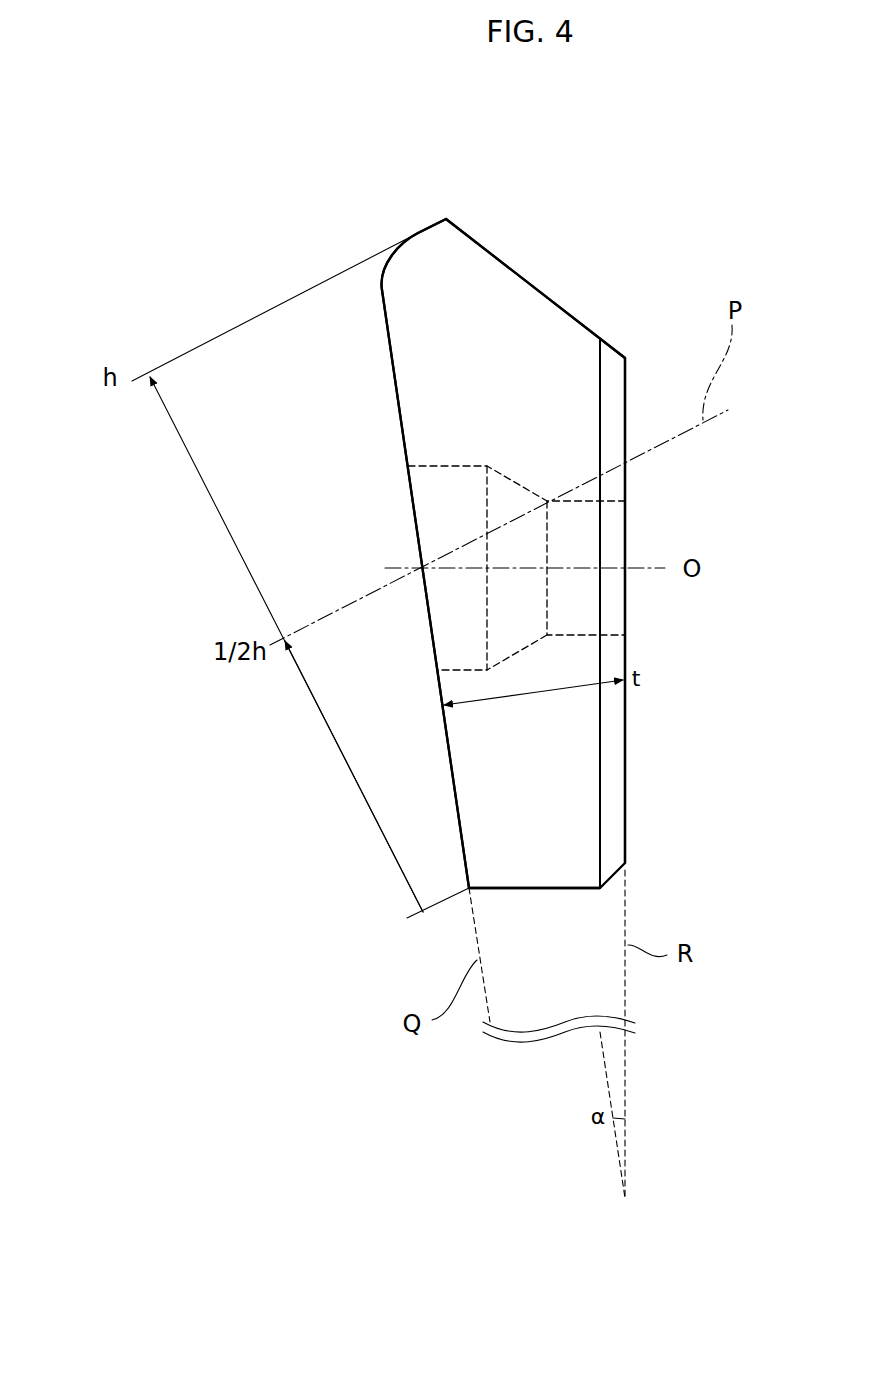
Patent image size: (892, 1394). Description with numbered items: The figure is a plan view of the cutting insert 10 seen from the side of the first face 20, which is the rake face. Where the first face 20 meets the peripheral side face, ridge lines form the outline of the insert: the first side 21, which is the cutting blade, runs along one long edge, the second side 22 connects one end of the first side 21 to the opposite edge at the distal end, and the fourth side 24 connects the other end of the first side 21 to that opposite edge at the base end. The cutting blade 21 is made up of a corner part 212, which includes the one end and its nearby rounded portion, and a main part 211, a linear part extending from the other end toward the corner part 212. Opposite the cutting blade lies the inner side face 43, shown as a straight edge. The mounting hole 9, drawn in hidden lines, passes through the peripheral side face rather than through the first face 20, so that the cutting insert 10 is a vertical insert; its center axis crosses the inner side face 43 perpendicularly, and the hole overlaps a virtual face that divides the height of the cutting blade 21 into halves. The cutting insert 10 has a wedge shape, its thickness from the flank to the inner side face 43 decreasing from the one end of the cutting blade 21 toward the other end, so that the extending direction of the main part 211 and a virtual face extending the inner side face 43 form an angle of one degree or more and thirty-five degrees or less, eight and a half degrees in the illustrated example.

The cutting insert 10 is at (421, 1253).
The first face 20 is at (562, 767).
The first side 21 is at (350, 497).
The main part 211 is at (398, 432).
The corner part 212 is at (427, 228).
The second side 22 is at (537, 288).
The fourth side 24 is at (533, 887).
The inner side face 43 is at (629, 722).
The mounting hole 9 is at (442, 468).